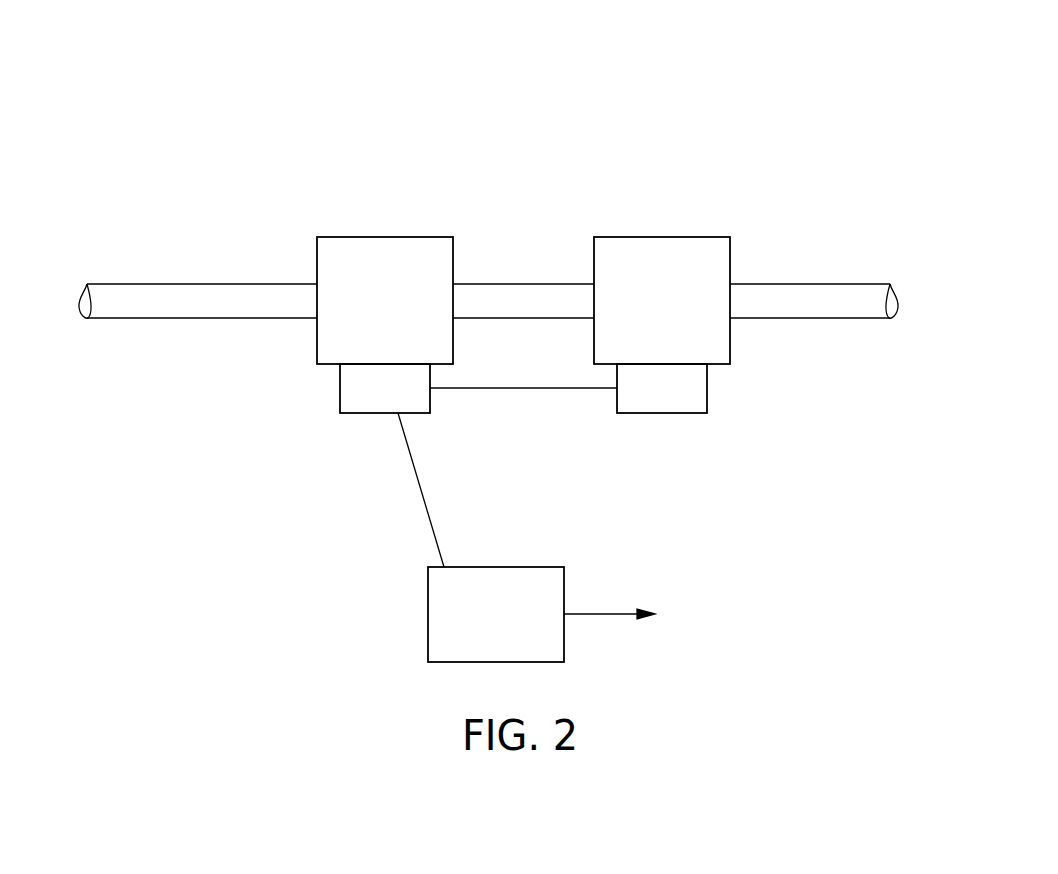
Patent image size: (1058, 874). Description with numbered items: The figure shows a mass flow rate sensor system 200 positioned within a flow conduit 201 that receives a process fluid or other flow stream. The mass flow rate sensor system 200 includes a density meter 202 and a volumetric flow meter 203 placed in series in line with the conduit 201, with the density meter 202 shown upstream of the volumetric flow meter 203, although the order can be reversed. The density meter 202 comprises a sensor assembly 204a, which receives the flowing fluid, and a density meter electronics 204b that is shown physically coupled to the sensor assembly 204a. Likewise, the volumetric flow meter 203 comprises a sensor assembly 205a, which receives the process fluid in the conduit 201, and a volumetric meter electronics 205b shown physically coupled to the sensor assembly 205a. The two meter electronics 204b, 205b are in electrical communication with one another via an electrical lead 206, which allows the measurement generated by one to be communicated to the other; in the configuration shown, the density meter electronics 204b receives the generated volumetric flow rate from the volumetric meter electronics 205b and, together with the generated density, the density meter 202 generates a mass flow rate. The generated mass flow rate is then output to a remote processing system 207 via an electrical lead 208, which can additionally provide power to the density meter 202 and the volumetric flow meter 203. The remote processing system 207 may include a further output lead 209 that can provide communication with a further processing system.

The mass flow rate sensor system 200 is at (740, 108).
The flow conduit 201 is at (218, 283).
The density meter 202 is at (405, 235).
The volumetric flow meter 203 is at (655, 235).
The sensor assembly 204a is at (367, 311).
The density meter electronics 204b is at (364, 402).
The sensor assembly 205a is at (644, 311).
The volumetric meter electronics 205b is at (641, 402).
The electrical lead 206 is at (529, 390).
The remote processing system 207 is at (483, 625).
The electrical lead 208 is at (432, 519).
The output lead 209 is at (628, 612).